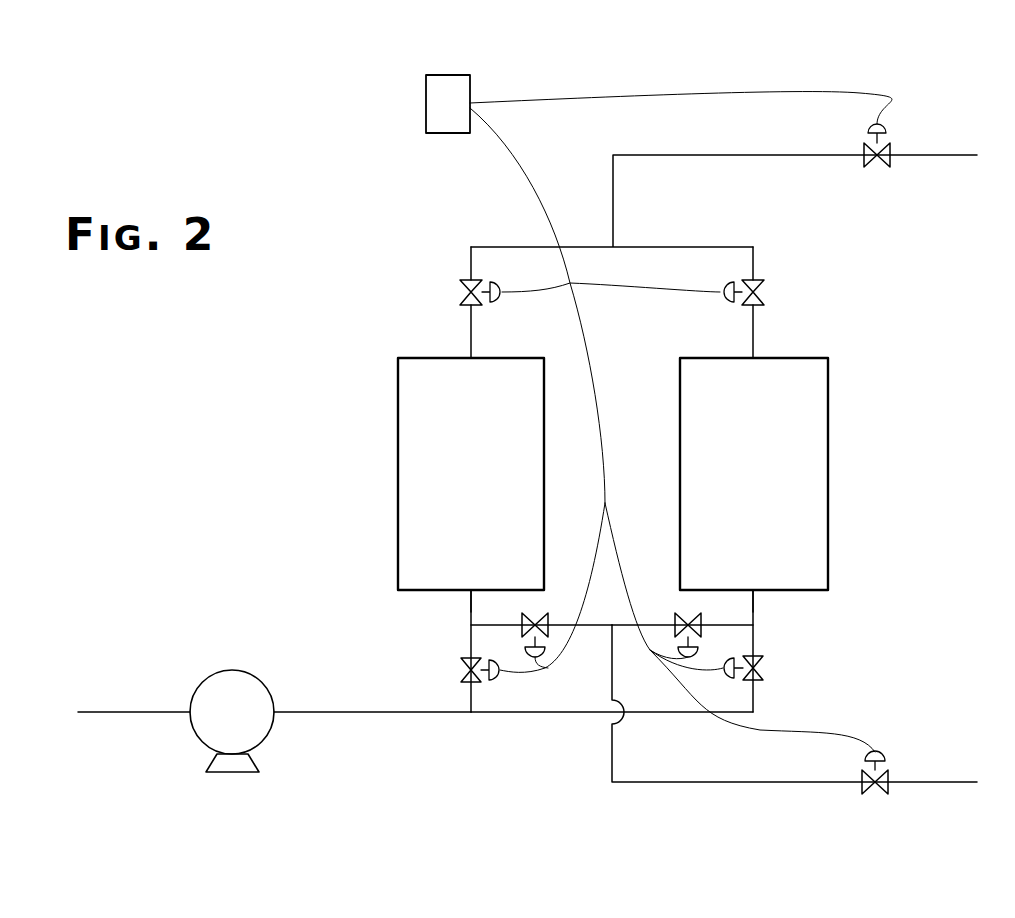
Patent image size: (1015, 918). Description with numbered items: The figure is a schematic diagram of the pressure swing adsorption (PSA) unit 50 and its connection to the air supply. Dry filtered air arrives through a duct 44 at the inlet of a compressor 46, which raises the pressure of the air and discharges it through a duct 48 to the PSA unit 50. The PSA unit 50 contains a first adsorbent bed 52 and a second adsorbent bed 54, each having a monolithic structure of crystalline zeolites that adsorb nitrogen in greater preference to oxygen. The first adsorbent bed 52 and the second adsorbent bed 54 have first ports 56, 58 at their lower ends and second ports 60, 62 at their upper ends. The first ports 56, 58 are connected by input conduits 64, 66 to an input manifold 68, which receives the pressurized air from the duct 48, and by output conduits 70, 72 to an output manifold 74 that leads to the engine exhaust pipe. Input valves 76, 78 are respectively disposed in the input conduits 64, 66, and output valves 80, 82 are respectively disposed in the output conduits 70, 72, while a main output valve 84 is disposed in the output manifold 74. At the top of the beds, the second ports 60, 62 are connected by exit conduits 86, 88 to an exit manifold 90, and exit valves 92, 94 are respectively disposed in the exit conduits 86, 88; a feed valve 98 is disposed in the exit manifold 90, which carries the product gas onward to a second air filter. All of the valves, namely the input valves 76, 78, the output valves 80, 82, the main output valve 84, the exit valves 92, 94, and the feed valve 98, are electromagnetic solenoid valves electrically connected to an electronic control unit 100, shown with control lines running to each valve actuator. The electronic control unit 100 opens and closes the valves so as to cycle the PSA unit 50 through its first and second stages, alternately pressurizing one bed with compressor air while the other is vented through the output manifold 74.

The duct 44 is at (133, 712).
The compressor 46 is at (210, 735).
The duct 48 is at (318, 715).
The pressure swing adsorption unit 50 is at (911, 395).
The first adsorbent bed 52 is at (438, 502).
The second adsorbent bed 54 is at (768, 508).
The first port 56 is at (467, 595).
The first port 58 is at (758, 594).
The second port 60 is at (470, 357).
The second port 62 is at (753, 357).
The input conduit 64 is at (470, 698).
The input conduit 66 is at (756, 697).
The input manifold 68 is at (535, 715).
The output conduit 70 is at (492, 631).
The output conduit 72 is at (737, 628).
The output manifold 74 is at (610, 760).
The input valve 76 is at (478, 672).
The input valve 78 is at (765, 668).
The output valve 80 is at (545, 618).
The output valve 82 is at (680, 620).
The main output valve 84 is at (884, 792).
The exit conduit 86 is at (471, 320).
The exit conduit 88 is at (753, 322).
The exit manifold 90 is at (677, 158).
The exit valve 92 is at (462, 283).
The exit valve 94 is at (760, 283).
The feed valve 98 is at (892, 150).
The electronic control unit 100 is at (457, 75).